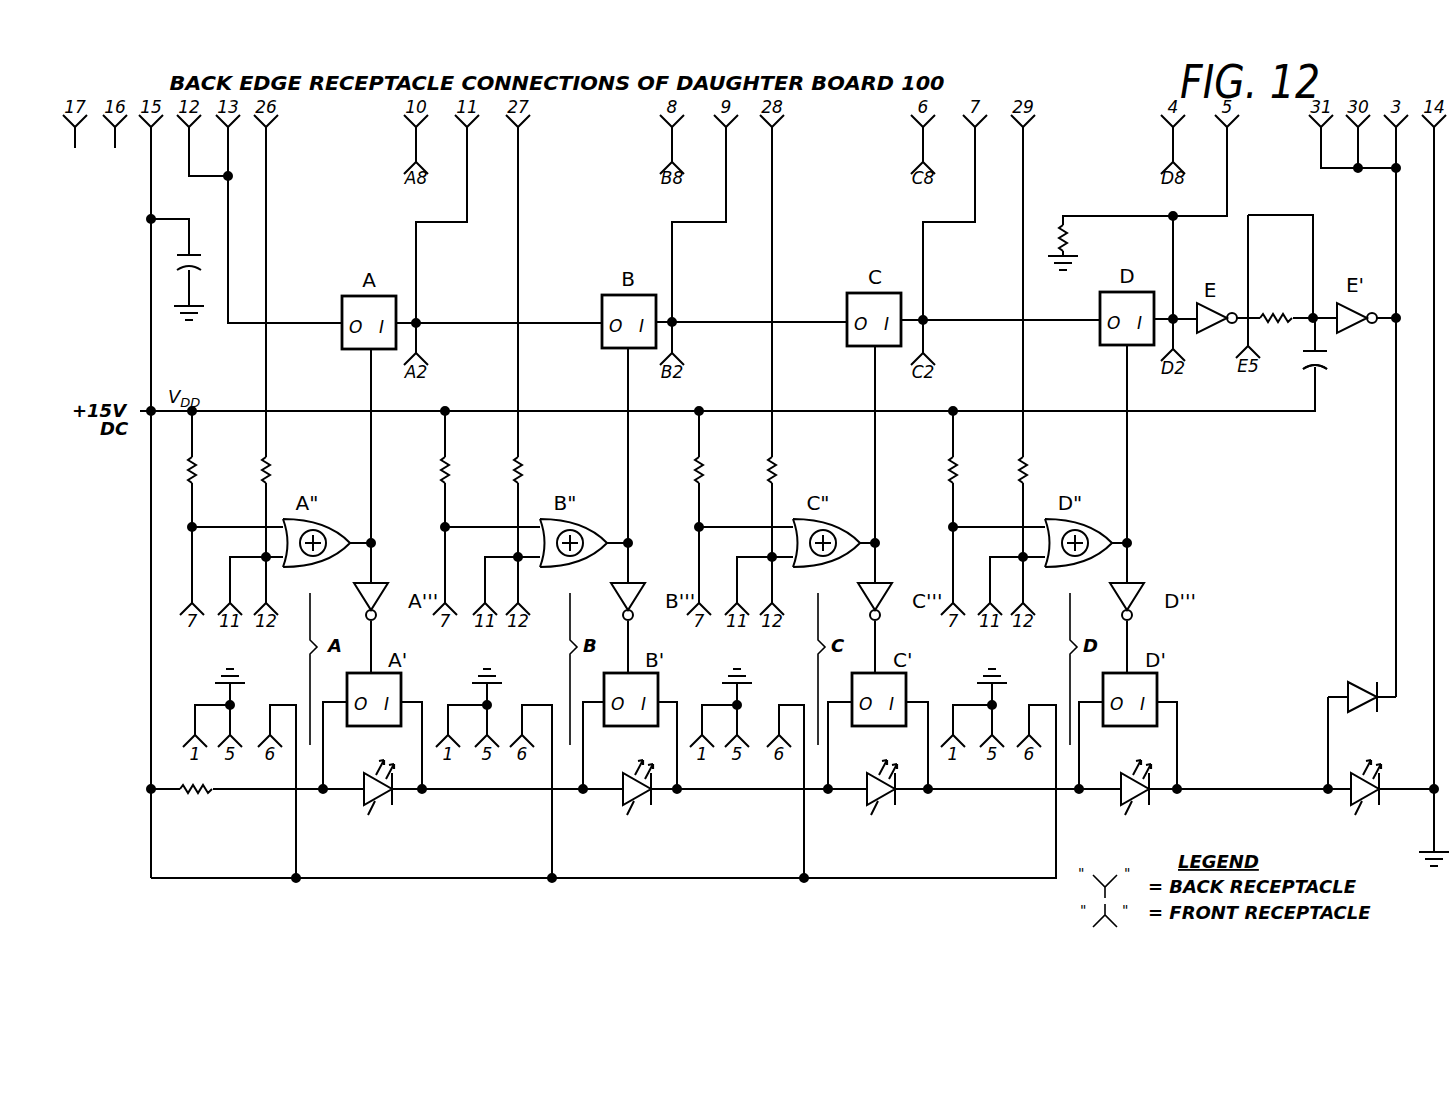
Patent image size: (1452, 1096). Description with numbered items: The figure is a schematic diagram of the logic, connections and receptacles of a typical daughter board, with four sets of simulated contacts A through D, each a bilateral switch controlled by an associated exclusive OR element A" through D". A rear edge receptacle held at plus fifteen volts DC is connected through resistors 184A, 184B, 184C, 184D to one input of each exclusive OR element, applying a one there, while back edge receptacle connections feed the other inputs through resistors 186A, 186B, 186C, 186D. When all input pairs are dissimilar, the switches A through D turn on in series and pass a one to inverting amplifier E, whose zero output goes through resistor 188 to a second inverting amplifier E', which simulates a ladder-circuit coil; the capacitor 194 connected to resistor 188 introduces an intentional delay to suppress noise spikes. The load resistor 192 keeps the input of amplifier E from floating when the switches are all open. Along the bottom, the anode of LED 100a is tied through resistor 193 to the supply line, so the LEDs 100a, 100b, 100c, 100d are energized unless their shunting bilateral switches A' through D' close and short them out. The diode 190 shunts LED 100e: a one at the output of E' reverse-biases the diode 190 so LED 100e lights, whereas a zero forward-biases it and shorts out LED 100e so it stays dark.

The resistor 184A is at (221, 470).
The resistor 184B is at (416, 470).
The resistor 184C is at (671, 470).
The resistor 184D is at (924, 470).
The resistor 186A is at (295, 470).
The resistor 186B is at (543, 470).
The resistor 186C is at (797, 470).
The resistor 186D is at (1048, 470).
The resistor 188 is at (1275, 305).
The diode 190 is at (1366, 688).
The load resistor 192 is at (1083, 238).
The resistor 193 is at (196, 800).
The capacitor 194 is at (1315, 375).
The LED 100a is at (382, 808).
The LED 100b is at (641, 808).
The LED 100c is at (885, 808).
The LED 100d is at (1139, 808).
The LED 100e is at (1369, 808).